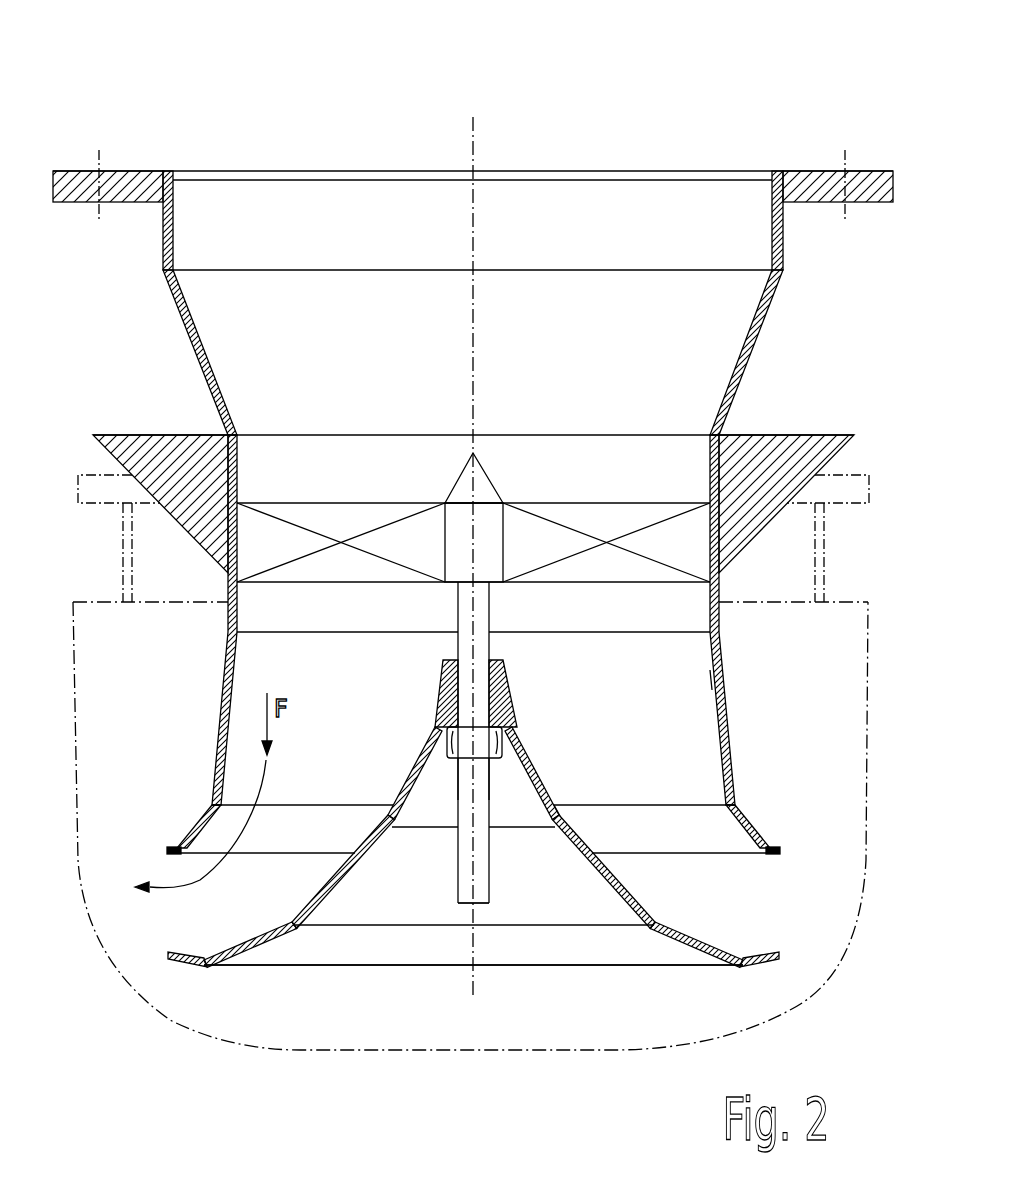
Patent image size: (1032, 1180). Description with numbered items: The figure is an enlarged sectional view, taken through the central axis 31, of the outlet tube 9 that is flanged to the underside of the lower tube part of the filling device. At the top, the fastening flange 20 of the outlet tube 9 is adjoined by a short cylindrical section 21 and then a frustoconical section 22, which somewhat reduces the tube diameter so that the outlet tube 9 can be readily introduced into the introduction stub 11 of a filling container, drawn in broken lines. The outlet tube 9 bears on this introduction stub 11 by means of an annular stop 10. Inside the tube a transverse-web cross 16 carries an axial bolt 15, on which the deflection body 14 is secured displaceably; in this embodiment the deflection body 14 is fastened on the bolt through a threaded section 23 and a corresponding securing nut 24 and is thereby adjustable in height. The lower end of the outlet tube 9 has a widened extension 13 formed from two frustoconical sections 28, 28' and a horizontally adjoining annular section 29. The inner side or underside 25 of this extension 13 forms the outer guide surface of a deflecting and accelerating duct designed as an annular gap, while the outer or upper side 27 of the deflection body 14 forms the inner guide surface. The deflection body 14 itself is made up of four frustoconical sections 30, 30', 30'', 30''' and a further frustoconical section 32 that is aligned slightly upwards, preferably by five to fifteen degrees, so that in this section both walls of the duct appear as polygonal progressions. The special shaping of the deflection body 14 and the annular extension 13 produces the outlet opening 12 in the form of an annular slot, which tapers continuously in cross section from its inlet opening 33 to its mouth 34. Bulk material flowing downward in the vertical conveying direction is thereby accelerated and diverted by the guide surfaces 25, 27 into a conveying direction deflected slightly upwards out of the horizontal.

The outlet tube 9 is at (644, 75).
The annular stop 10 is at (785, 437).
The introduction stub 11 is at (853, 498).
The outlet opening 12 is at (768, 894).
The extension 13 is at (770, 718).
The deflection body 14 is at (540, 897).
The axial bolt 15 is at (487, 640).
The transverse-web cross 16 is at (571, 565).
The fastening flange 20 is at (813, 176).
The short cylindrical section 21 is at (784, 217).
The frustoconical section 22 is at (764, 310).
The threaded section 23 is at (485, 790).
The securing nut 24 is at (499, 742).
The inner side or underside 25 is at (660, 693).
The outer or upper side 27 is at (572, 790).
The frustoconical section 28 is at (495, 620).
The frustoconical section 28' is at (496, 792).
The annular section 29 is at (781, 843).
The frustoconical section 30 is at (448, 693).
The frustoconical section 30' is at (473, 773).
The frustoconical section 30'' is at (474, 872).
The frustoconical section 30''' is at (473, 929).
The central axis 31 is at (473, 120).
The frustoconical section 32 is at (180, 950).
The inlet opening 33 is at (358, 632).
The mouth 34 is at (172, 875).